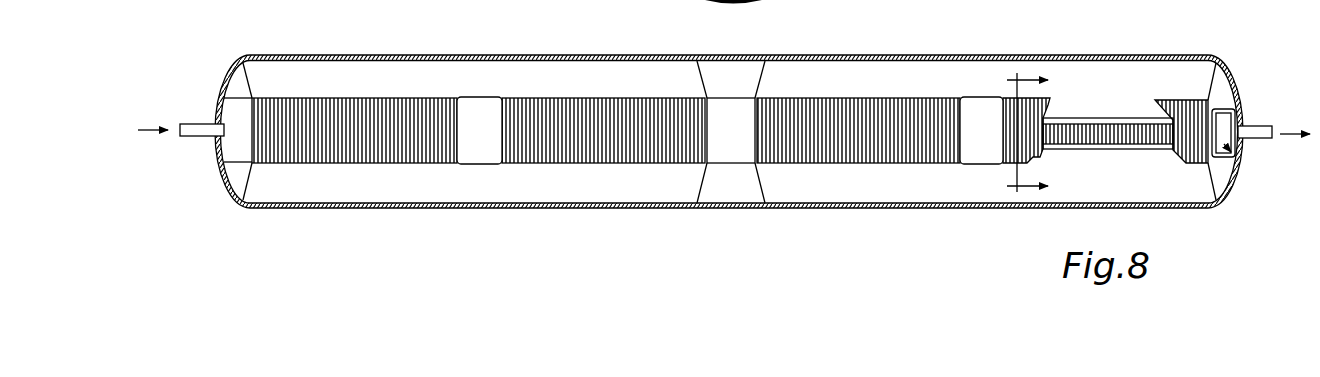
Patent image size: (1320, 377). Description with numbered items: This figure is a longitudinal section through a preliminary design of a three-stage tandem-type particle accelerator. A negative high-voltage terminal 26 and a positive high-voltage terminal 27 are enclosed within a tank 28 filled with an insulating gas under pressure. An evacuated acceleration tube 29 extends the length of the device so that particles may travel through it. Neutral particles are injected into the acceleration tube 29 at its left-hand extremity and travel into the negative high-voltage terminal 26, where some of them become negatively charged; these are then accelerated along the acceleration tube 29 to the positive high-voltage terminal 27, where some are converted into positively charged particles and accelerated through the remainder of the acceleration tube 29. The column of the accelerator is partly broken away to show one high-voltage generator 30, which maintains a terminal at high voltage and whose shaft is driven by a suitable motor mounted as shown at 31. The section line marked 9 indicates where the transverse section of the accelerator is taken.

The section line 9- 9 is at (1037, 134).
The negative high-voltage terminal 26 is at (497, 165).
The positive high-voltage terminal 27 is at (970, 165).
The tank 28 is at (410, 55).
The acceleration tube 29 is at (190, 123).
The high-voltage generator 30 is at (1085, 128).
The motor mounting 31 is at (1238, 157).